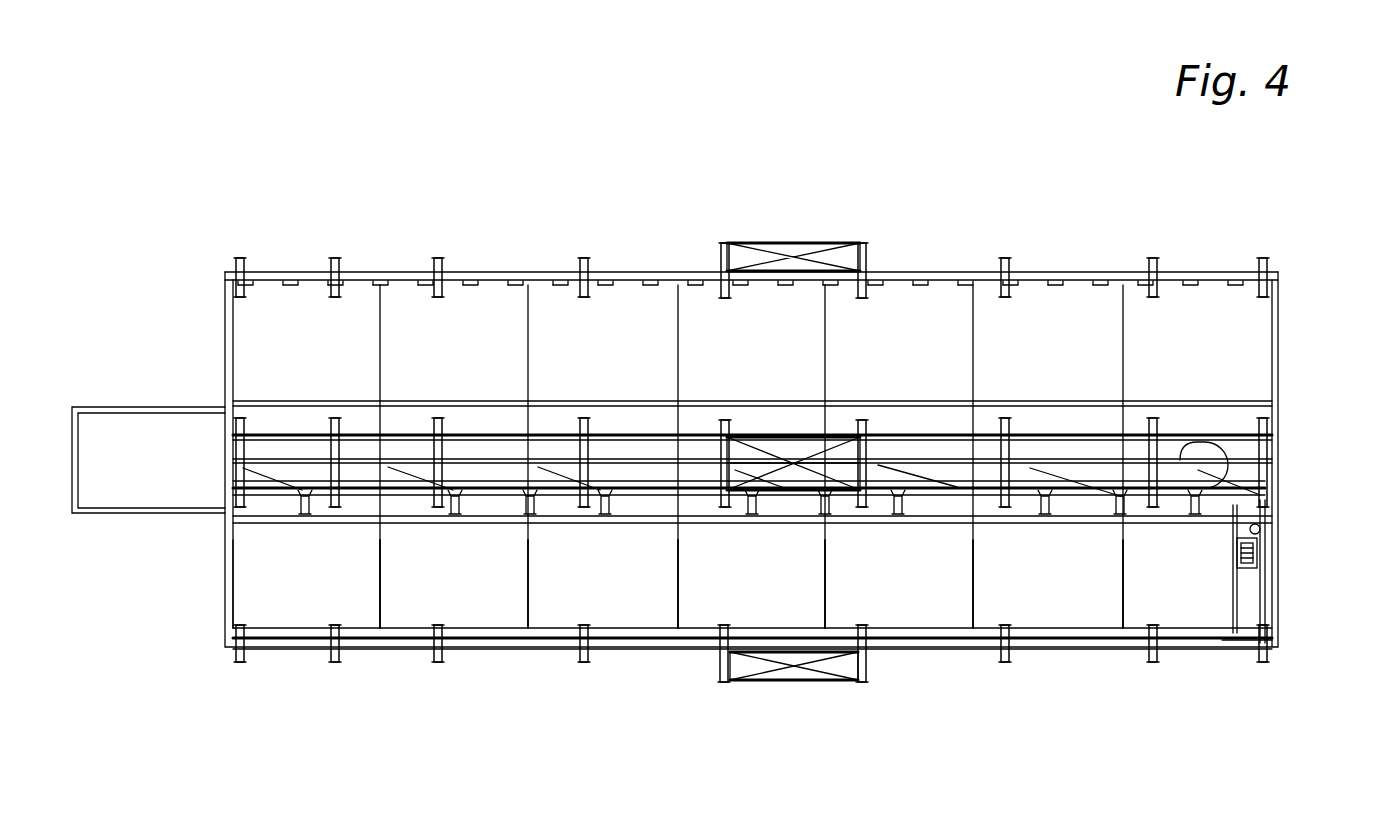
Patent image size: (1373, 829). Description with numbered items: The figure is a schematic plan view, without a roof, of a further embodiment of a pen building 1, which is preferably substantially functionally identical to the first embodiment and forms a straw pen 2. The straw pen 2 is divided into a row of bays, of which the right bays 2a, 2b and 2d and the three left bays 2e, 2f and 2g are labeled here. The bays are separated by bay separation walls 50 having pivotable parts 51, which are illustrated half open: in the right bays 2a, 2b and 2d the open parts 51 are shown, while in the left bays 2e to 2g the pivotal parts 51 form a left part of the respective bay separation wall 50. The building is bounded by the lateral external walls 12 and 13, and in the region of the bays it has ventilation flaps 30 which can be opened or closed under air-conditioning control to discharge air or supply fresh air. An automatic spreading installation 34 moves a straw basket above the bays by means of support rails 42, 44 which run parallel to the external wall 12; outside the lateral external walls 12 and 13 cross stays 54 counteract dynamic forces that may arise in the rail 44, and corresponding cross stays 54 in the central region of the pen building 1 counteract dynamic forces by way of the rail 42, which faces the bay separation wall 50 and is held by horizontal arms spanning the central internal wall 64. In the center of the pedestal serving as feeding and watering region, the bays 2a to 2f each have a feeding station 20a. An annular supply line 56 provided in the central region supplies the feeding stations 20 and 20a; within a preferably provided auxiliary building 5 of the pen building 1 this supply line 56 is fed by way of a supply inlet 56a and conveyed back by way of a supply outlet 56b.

The pen building 1 is at (442, 149).
The straw pen 2 is at (1080, 279).
The bay 2a is at (1050, 615).
The bay 2b is at (1190, 607).
The bay 2d is at (702, 605).
The bay 2e is at (620, 605).
The bay 2f is at (480, 612).
The bay 2g is at (318, 613).
The auxiliary building 5 is at (100, 518).
The external wall 12 is at (262, 643).
The external wall 13 is at (260, 272).
The feeding station 20 is at (531, 517).
The feeding station 20a is at (308, 517).
The ventilation flap 30 is at (937, 279).
The automatic spreading installation 34 is at (1226, 568).
The support rail 42 is at (700, 500).
The support rail 44 is at (872, 637).
The bay separation wall 50 is at (358, 487).
The pivotable part 51 is at (270, 470).
The cross stay 54 is at (821, 243).
The annular supply line 56 is at (1215, 440).
The supply inlet 56a is at (225, 483).
The supply outlet 56b is at (225, 437).
The central internal wall 64 is at (1232, 455).